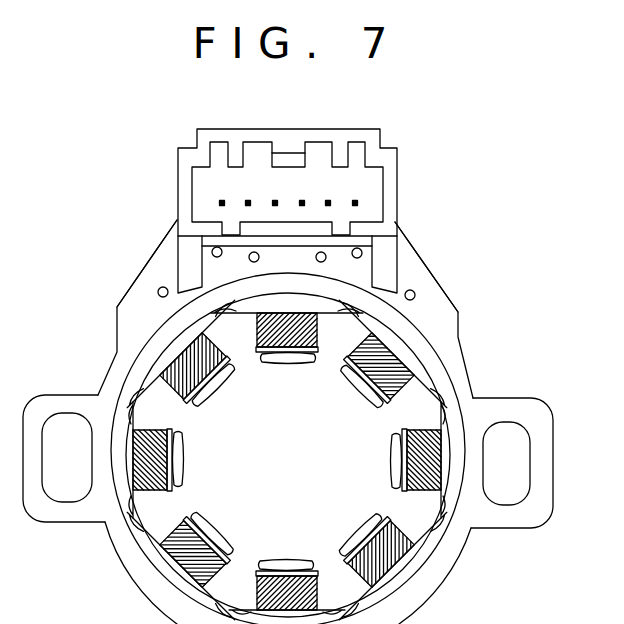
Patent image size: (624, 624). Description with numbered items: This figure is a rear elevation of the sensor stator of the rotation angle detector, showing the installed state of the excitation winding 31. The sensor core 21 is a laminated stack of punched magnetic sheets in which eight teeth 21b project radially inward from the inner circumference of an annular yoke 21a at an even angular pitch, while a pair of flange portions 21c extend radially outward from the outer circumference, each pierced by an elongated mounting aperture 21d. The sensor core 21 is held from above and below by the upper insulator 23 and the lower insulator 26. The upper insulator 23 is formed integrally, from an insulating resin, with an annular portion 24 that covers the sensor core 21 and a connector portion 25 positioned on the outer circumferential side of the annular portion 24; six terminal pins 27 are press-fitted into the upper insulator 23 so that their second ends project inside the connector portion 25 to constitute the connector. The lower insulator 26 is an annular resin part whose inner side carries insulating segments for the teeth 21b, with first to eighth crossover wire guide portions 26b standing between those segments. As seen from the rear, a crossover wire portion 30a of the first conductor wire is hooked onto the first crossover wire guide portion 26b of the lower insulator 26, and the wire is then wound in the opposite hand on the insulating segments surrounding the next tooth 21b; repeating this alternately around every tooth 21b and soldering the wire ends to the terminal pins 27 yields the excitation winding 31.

The sensor core 21 is at (72, 395).
The annular yoke 21a is at (127, 548).
The teeth 21b is at (388, 459).
The flange portions 21c is at (500, 529).
The mounting apertures 21d is at (518, 506).
The upper insulator 23 is at (403, 223).
The annular portion 24 is at (151, 254).
The connector portion 25 is at (387, 157).
The lower insulator 26 is at (423, 369).
The crossover wire guide portions 26b is at (433, 400).
The terminal pins 27 is at (358, 203).
The crossover wire portion 30a is at (396, 299).
The excitation winding 31 is at (280, 340).